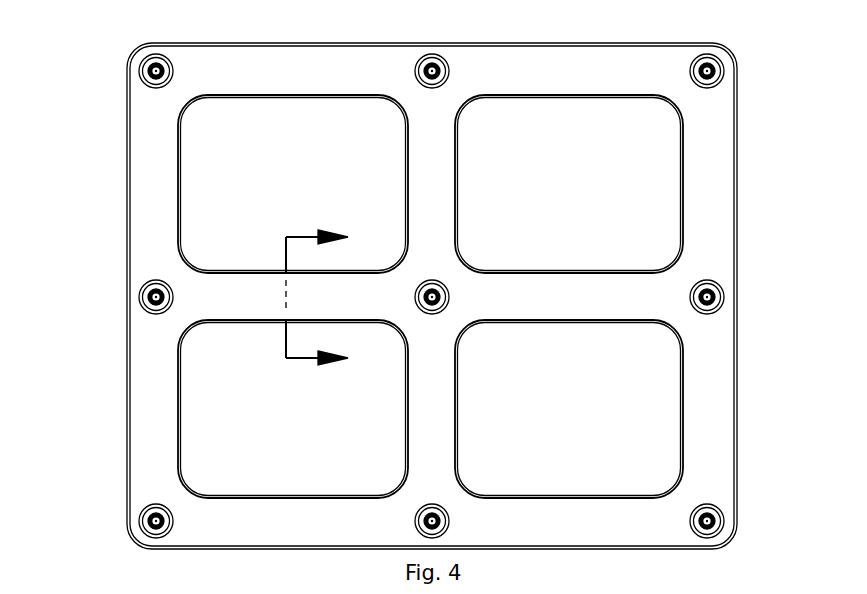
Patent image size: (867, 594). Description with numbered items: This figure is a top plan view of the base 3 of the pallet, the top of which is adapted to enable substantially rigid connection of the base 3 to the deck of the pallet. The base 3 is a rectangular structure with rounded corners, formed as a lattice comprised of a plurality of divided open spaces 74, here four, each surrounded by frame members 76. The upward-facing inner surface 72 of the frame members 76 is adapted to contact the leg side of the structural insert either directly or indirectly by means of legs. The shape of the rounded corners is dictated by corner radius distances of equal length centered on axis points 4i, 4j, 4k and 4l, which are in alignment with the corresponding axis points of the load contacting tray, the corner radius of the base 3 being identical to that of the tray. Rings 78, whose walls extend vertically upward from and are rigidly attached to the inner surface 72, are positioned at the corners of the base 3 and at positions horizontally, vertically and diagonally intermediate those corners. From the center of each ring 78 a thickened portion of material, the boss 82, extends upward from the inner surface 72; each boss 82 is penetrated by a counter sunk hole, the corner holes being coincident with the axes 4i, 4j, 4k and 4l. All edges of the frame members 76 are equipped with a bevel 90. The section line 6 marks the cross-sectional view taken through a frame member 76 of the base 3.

The base 3 is at (105, 348).
The axis point 4i is at (140, 515).
The axis point 4j is at (140, 66).
The axis point 4k is at (716, 69).
The axis point 4l is at (716, 524).
The section line 6- 6 is at (325, 298).
The inner surface 72 is at (264, 81).
The divided open spaces 74 is at (304, 191).
The frame members 76 is at (128, 144).
The rings 78 is at (153, 58).
The boss 82 is at (160, 67).
The bevel 90 is at (128, 193).